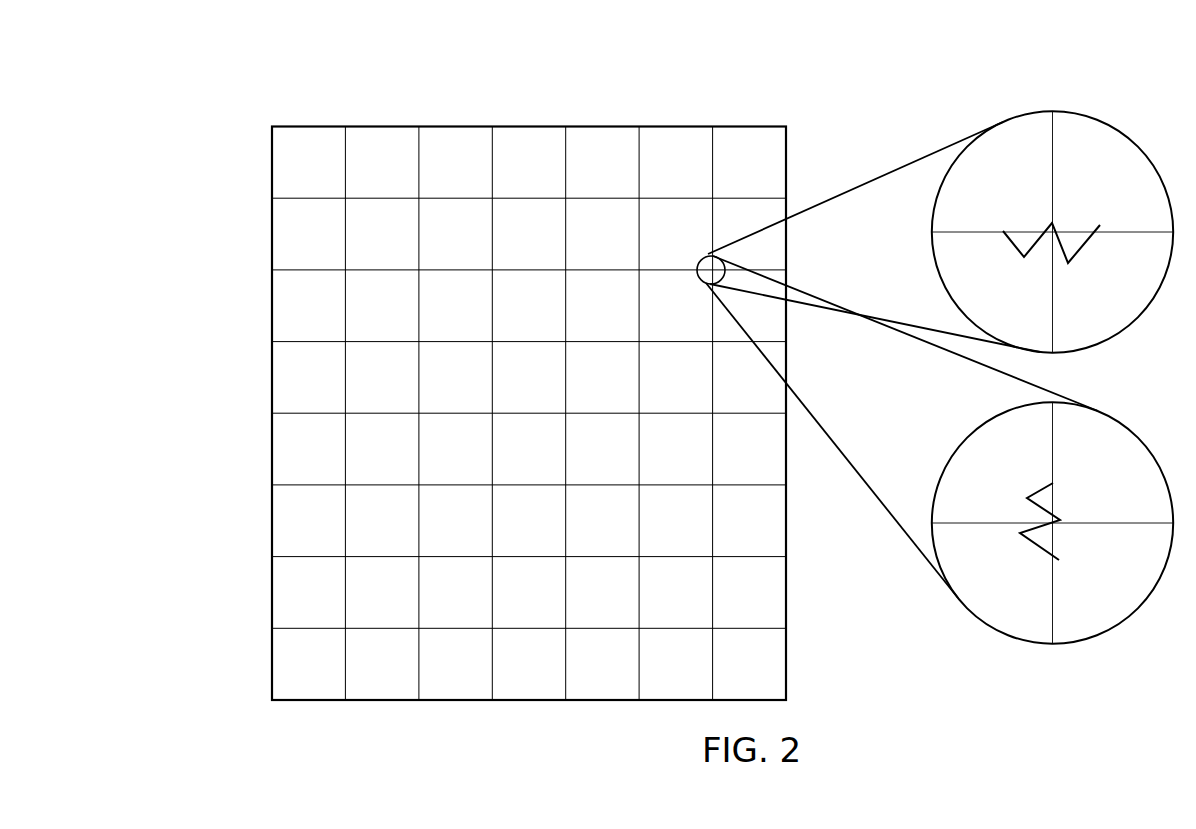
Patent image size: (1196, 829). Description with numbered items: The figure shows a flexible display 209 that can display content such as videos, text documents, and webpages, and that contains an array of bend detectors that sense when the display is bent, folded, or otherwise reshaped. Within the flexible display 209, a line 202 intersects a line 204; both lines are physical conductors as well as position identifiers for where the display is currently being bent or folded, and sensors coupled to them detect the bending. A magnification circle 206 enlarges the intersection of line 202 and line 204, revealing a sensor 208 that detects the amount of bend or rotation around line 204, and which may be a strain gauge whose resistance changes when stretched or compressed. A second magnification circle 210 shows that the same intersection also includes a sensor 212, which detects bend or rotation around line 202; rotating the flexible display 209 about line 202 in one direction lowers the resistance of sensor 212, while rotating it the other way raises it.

The flexible display 209 is at (501, 370).
The line 202 is at (507, 412).
The line 204 is at (528, 390).
The magnification circle 206 is at (1052, 202).
The sensor 208 is at (1064, 221).
The magnification circle 210 is at (1046, 547).
The sensor 212 is at (985, 503).